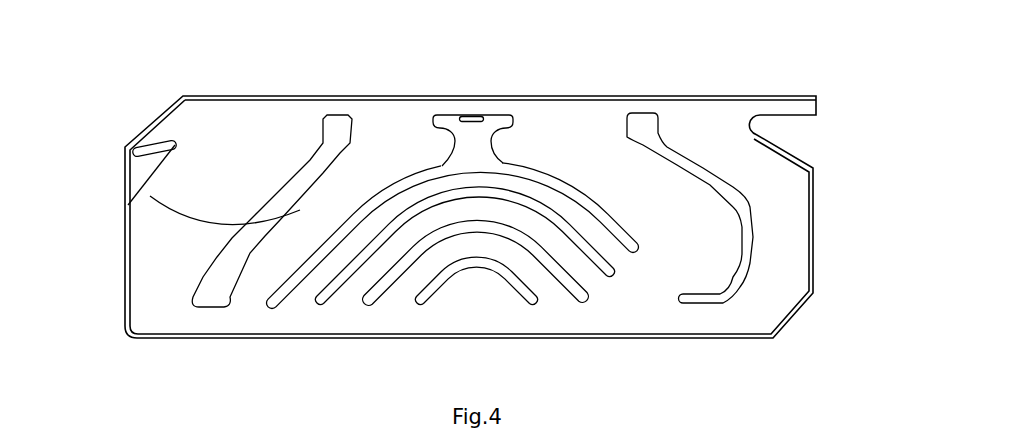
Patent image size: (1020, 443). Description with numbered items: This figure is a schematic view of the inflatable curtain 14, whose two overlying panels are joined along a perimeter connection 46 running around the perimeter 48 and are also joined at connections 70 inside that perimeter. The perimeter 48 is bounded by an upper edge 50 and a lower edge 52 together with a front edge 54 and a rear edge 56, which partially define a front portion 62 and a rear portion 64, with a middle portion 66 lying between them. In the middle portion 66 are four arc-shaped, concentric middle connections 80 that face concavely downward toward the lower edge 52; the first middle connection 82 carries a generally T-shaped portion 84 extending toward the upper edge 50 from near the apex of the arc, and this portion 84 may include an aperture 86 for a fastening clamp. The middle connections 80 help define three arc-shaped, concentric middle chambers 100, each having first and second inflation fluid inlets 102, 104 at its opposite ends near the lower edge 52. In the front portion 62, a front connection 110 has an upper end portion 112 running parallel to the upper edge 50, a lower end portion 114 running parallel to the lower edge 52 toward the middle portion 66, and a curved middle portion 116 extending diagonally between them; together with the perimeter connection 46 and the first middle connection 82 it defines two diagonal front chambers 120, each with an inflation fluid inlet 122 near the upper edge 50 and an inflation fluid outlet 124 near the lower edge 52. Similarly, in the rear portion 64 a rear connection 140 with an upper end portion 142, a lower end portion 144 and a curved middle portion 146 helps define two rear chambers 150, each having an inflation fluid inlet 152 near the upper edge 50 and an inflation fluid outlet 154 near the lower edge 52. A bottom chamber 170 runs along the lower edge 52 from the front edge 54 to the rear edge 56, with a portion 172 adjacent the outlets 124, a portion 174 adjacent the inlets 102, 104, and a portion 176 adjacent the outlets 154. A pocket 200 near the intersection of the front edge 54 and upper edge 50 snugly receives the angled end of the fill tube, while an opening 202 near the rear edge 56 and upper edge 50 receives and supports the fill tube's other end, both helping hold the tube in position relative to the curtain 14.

The inflatable curtain 14 is at (209, 60).
The perimeter connection 46 is at (287, 343).
The perimeter 48 is at (300, 304).
The upper edge 50 is at (543, 94).
The lower edge 52 is at (527, 337).
The front edge 54 is at (123, 220).
The rear edge 56 is at (817, 207).
The front portion 62 is at (147, 263).
The rear portion 64 is at (780, 243).
The middle portion 66 is at (400, 250).
The connections 70 is at (582, 303).
The middle connections 80 is at (505, 268).
The first middle connection 82 is at (440, 157).
The T-shaped portion 84 is at (447, 115).
The aperture 86 is at (480, 116).
The middle chambers 100 is at (467, 250).
The first inflation fluid inlets 102 is at (352, 303).
The second inflation fluid inlets 104 is at (600, 277).
The front connection 110 is at (277, 187).
The upper end portion 112 is at (342, 127).
The lower end portion 114 is at (210, 307).
The middle portion 116 is at (243, 210).
The front chambers 120 is at (187, 220).
The inflation fluid inlet 122 is at (387, 130).
The inflation fluid outlet 124 is at (248, 303).
The rear connection 140 is at (733, 193).
The upper end portion 142 is at (643, 120).
The lower end portion 144 is at (697, 300).
The middle portion 146 is at (708, 185).
The rear chambers 150 is at (620, 160).
The inflation fluid inlet 152 is at (703, 120).
The inflation fluid outlet 154 is at (673, 283).
The bottom chamber 170 is at (410, 320).
The portion 172 is at (190, 323).
The portion 174 is at (428, 318).
The portion 176 is at (708, 313).
The pocket 200 is at (153, 140).
The opening 202 is at (783, 103).